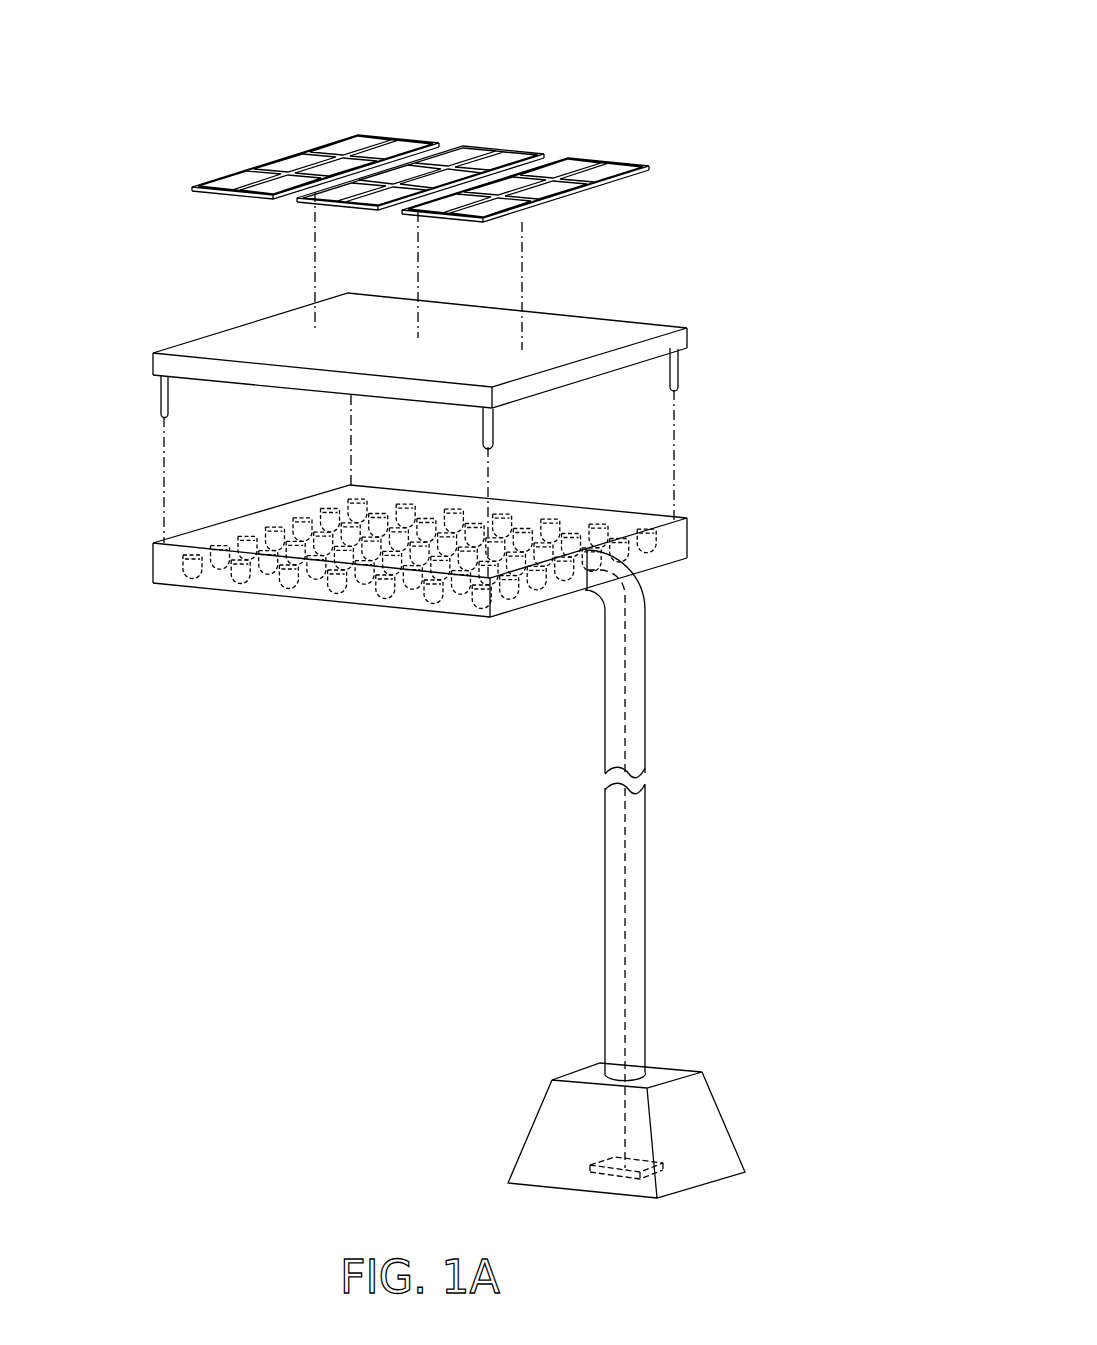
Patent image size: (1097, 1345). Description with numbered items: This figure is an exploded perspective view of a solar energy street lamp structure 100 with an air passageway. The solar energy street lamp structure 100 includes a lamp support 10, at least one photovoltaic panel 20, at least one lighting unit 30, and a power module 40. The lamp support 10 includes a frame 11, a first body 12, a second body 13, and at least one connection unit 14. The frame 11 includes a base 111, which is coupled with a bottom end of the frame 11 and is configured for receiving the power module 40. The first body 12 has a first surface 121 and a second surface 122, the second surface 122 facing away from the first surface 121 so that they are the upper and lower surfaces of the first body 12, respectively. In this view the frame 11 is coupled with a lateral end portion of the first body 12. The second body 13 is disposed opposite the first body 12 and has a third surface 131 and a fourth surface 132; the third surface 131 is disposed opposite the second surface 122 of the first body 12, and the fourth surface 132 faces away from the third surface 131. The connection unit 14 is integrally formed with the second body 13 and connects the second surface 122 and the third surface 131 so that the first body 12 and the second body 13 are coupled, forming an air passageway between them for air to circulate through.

The solar energy street lamp structure 100 is at (785, 34).
The lamp support 10 is at (773, 320).
The frame 11 is at (635, 690).
The base 111 is at (700, 1108).
The first body 12 is at (409, 583).
The first surface 121 is at (182, 587).
The second surface 122 is at (187, 537).
The second body 13 is at (433, 353).
The third surface 131 is at (207, 383).
The fourth surface 132 is at (200, 348).
The connection unit 14 is at (676, 380).
The photovoltaic panel 20 is at (488, 155).
The lighting unit 30 is at (381, 607).
The power module 40 is at (610, 1158).